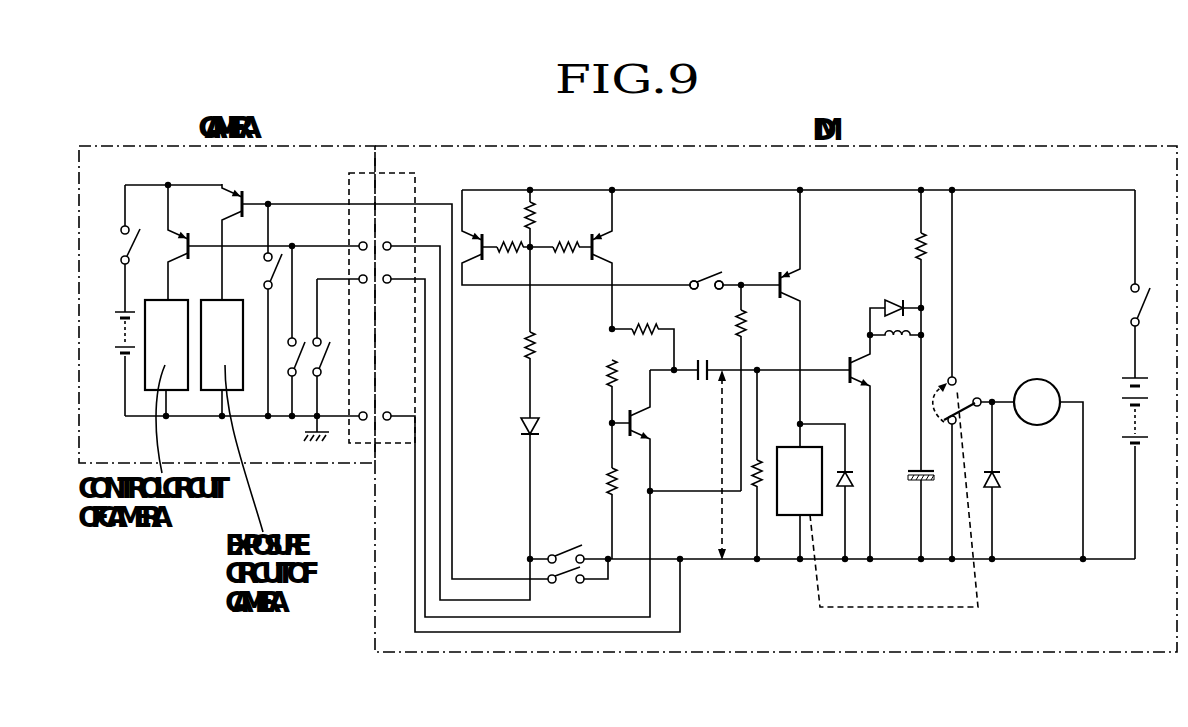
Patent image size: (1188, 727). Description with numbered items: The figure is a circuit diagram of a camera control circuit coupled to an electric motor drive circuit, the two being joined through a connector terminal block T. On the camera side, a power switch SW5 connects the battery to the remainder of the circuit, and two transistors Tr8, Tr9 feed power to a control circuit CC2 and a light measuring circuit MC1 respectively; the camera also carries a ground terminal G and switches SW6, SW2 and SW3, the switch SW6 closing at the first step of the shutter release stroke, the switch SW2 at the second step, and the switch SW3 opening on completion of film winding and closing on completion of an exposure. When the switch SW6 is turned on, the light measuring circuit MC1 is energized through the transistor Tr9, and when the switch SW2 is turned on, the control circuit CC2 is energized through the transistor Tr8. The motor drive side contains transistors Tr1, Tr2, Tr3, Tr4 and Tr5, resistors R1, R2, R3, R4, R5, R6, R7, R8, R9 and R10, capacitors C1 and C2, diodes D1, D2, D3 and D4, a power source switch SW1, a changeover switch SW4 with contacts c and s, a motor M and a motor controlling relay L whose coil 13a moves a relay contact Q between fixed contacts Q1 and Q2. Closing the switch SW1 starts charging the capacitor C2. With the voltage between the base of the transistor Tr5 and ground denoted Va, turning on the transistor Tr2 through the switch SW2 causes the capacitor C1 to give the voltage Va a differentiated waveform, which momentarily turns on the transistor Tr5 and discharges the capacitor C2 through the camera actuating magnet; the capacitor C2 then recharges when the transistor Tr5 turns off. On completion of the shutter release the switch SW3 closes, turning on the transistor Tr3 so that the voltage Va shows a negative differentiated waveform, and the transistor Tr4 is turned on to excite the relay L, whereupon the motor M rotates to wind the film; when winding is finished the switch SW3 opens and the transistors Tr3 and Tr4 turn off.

The transistor Tr1 is at (478, 234).
The transistor Tr2 is at (615, 247).
The transistor Tr3 is at (652, 422).
The transistor Tr4 is at (805, 285).
The transistor Tr5 is at (853, 358).
The transistor Tr8 is at (166, 225).
The transistor Tr9 is at (217, 204).
The resistor R1 is at (510, 261).
The resistor R2 is at (541, 218).
The resistor R3 is at (565, 261).
The resistor R4 is at (541, 348).
The resistor R5 is at (645, 315).
The resistor R6 is at (622, 376).
The resistor R7 is at (622, 481).
The resistor R8 is at (752, 325).
The resistor R9 is at (753, 470).
The resistor R10 is at (907, 248).
The diode D1 is at (541, 426).
The diode D2 is at (855, 463).
The diode D3 is at (894, 292).
The diode D4 is at (1005, 479).
The capacitor C1 is at (702, 354).
The capacitor C2 is at (925, 474).
The power source switch SW1 is at (1122, 305).
The switch SW2 is at (290, 352).
The switch SW3 is at (316, 352).
The switch SW4 is at (695, 270).
The power switch SW5 is at (113, 245).
The switch SW6 is at (406, 395).
The continuous contact of switch SW4 c is at (695, 296).
The single contact of switch SW4 s is at (720, 296).
The movable contact of relay switch Q is at (969, 385).
The fixed contact of relay switch Q1 is at (943, 369).
The fixed contact of relay switch Q2 is at (943, 433).
The relay coil 13a is at (895, 351).
The motor controlling relay L is at (799, 481).
The motor M is at (1037, 402).
The control circuit CC2 is at (166, 345).
The light measuring circuit MC1 is at (222, 345).
The ground terminal G is at (379, 403).
The connector terminals T is at (349, 173).
The voltage Va is at (714, 465).